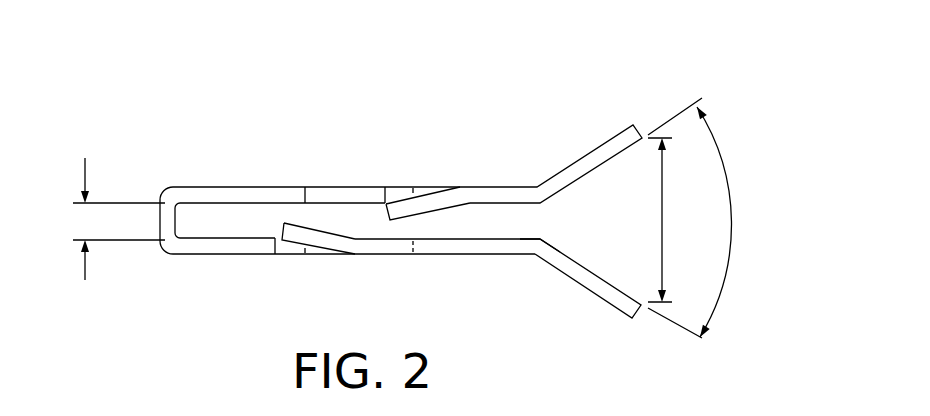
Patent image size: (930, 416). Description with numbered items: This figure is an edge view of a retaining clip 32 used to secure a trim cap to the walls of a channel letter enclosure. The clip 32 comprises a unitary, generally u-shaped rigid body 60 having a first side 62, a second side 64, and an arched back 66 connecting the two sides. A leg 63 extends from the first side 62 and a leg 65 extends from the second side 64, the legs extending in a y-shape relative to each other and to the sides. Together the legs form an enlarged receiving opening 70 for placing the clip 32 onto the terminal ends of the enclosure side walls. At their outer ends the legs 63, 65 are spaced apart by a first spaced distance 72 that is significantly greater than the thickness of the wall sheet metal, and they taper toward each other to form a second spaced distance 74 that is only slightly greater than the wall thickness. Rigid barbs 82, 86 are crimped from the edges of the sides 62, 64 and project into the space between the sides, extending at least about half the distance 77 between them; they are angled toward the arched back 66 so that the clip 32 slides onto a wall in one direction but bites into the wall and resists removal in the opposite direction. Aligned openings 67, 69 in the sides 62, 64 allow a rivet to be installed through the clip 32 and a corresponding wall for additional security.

The retaining clip 32 is at (250, 104).
The u-shaped rigid body 60 is at (220, 182).
The first side 62 is at (262, 192).
The leg 63 is at (585, 158).
The second side 64 is at (237, 252).
The leg 65 is at (582, 278).
The arched back 66 is at (165, 222).
The opening 67 is at (332, 195).
The opening 69 is at (400, 251).
The enlarged receiving opening 70 is at (730, 212).
The first spaced distance 72 is at (662, 188).
The second spaced distance 74 is at (543, 223).
The distance between the sides 77 is at (82, 177).
The rigid barb 82 is at (423, 203).
The rigid barb 86 is at (300, 233).